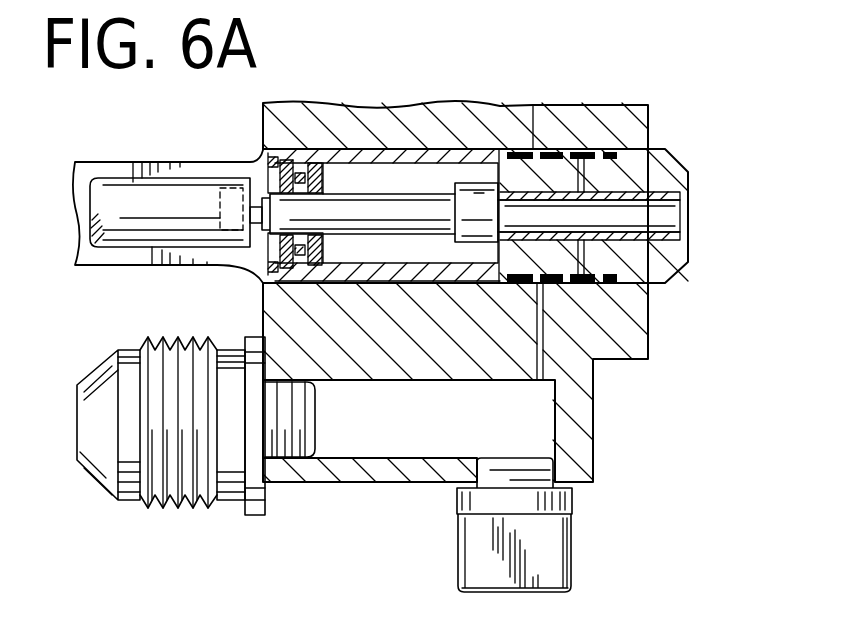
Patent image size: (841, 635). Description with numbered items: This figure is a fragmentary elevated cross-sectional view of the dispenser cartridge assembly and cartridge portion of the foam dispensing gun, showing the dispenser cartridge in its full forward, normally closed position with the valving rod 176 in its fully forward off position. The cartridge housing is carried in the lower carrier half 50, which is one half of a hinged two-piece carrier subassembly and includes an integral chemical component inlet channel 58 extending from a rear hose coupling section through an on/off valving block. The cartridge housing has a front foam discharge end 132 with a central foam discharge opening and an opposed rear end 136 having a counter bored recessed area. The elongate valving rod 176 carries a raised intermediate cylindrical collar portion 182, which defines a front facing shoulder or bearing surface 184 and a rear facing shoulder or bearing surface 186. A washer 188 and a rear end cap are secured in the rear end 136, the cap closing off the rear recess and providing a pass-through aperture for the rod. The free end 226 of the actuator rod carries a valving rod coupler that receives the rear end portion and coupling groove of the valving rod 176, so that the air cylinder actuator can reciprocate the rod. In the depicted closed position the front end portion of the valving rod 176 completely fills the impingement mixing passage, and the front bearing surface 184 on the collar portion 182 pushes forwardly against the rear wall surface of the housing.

The lower carrier half 50 is at (278, 306).
The chemical component inlet channel 58 is at (97, 360).
The front foam discharge end 132 is at (680, 158).
The rear end 136 is at (294, 148).
The valving rod 176 is at (393, 202).
The raised intermediate cylindrical collar portion 182 is at (481, 188).
The front facing shoulder or bearing surface 184 is at (538, 157).
The rear facing shoulder or bearing surface 186 is at (453, 188).
The washer 188 is at (350, 158).
The free end of actuator rod 226 is at (230, 172).